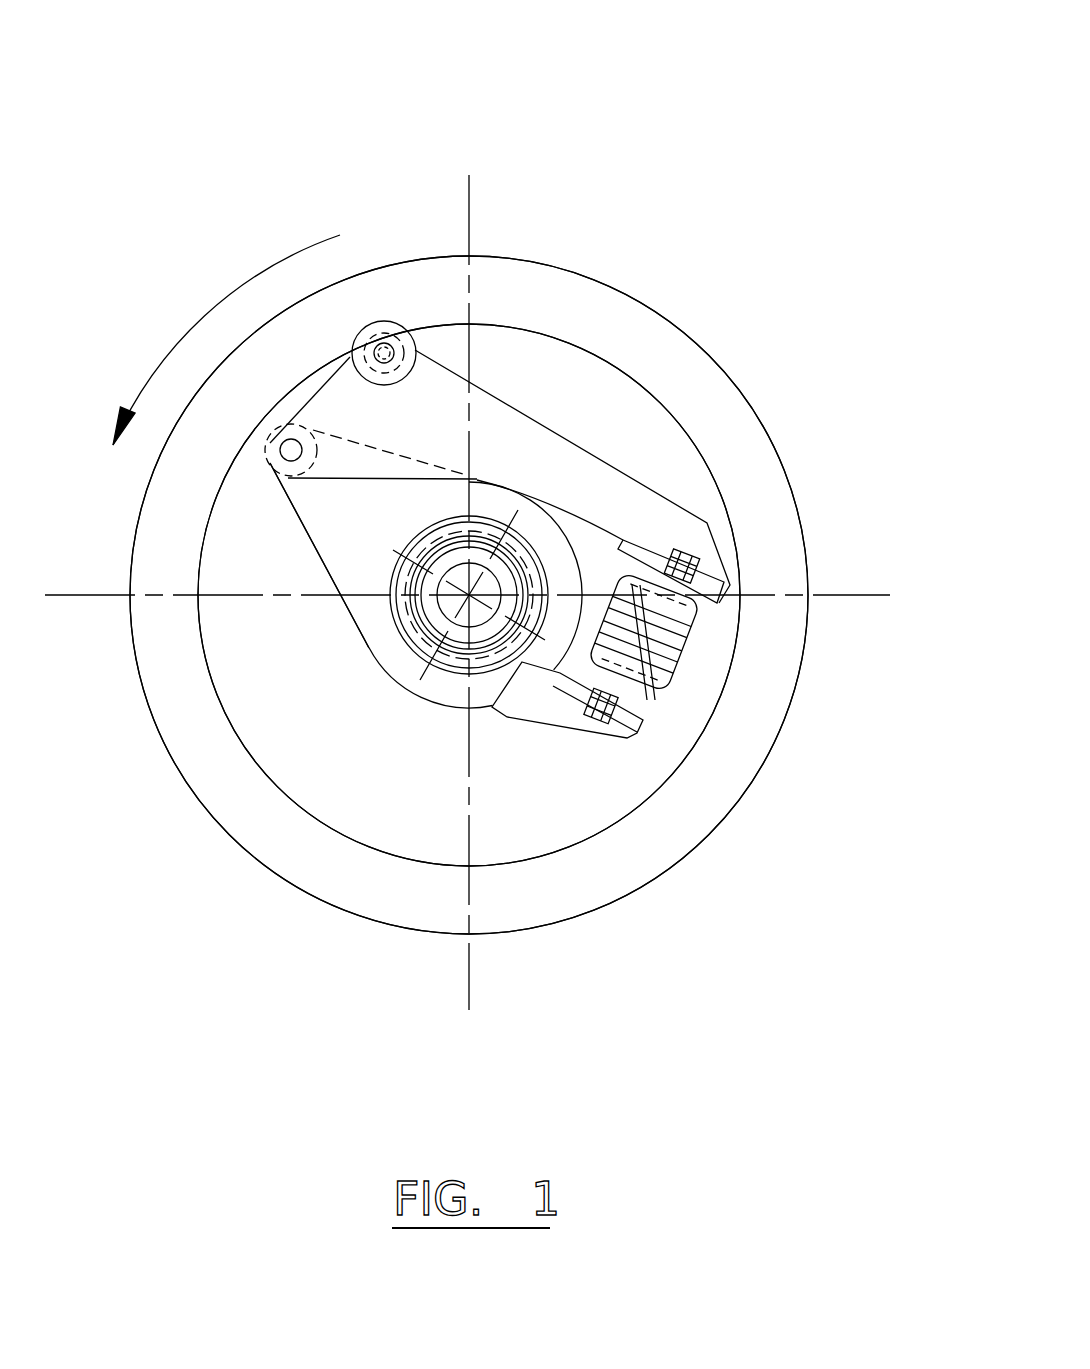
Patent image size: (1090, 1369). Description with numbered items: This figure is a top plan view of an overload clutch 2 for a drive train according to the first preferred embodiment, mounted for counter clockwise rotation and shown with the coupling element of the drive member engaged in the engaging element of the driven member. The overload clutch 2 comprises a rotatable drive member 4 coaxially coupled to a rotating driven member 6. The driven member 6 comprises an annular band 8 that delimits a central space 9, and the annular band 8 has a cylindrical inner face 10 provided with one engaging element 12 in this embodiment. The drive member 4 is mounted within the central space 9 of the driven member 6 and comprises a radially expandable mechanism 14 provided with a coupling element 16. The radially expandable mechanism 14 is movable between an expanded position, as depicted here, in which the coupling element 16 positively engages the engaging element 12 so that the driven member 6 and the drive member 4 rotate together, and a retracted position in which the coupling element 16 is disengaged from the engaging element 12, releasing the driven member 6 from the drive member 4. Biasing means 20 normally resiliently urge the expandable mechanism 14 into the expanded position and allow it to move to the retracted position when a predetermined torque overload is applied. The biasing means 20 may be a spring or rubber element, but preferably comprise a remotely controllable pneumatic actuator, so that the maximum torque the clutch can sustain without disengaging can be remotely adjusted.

The overload clutch 2 is at (708, 147).
The drive member 4 is at (358, 627).
The driven member 6 is at (580, 277).
The annular band 8 is at (645, 332).
The central space 9 is at (385, 778).
The cylindrical inner face 10 is at (593, 360).
The engaging element 12 is at (390, 323).
The radially expandable mechanism 14 is at (607, 460).
The coupling element 16 is at (400, 333).
The biasing means 20 is at (673, 690).